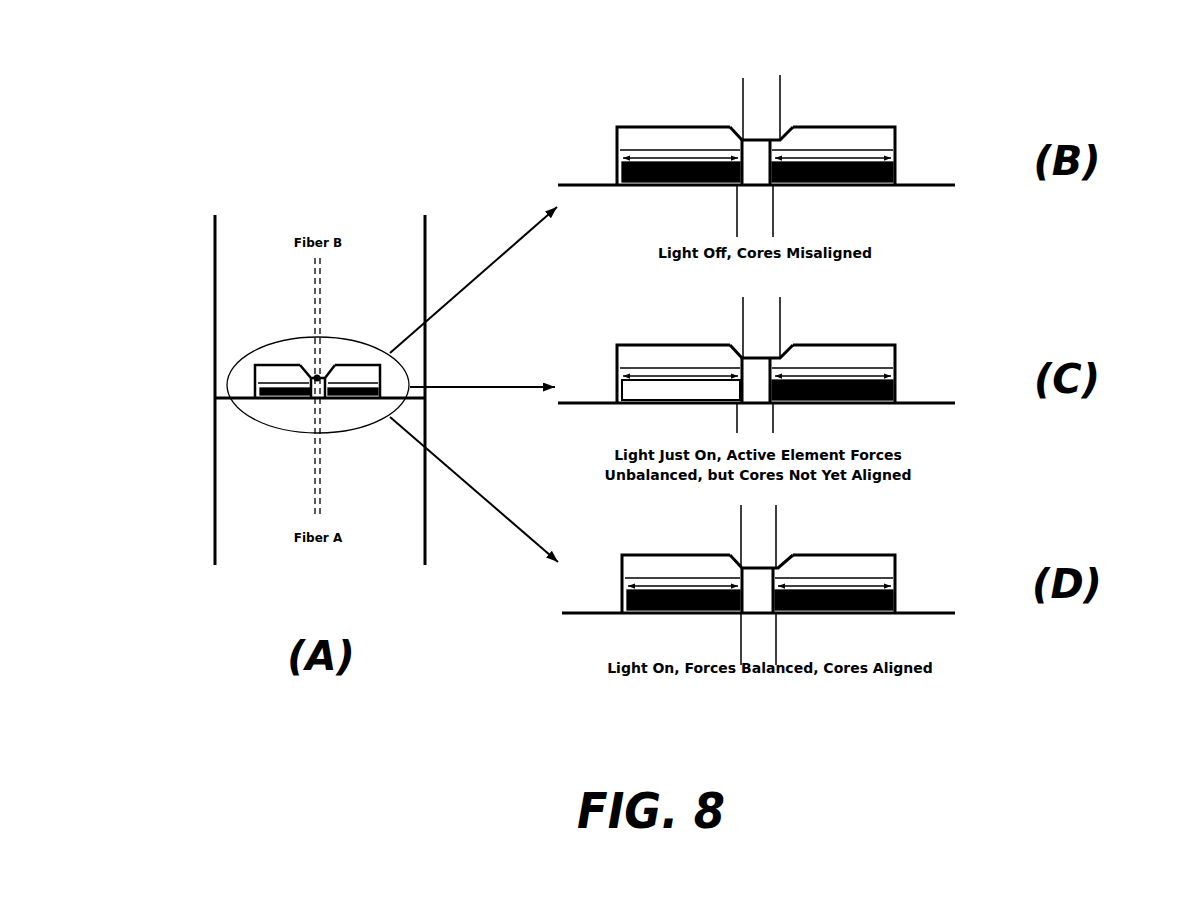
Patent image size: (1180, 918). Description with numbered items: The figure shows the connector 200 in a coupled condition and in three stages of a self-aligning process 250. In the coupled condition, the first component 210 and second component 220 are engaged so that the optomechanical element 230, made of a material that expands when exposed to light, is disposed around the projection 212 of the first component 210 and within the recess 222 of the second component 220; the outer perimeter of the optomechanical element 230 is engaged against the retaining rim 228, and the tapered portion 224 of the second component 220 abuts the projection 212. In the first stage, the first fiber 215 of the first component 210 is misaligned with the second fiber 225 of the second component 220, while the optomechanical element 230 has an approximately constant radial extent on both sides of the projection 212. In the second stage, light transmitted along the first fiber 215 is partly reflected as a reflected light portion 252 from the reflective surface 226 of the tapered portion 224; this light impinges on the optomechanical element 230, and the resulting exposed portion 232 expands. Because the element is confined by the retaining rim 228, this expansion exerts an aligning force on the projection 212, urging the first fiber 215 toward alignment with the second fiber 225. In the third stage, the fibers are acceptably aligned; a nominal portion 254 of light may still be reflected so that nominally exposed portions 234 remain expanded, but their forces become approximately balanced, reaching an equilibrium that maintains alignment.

The connector 200 is at (135, 307).
The first component 210 is at (215, 518).
The projection 212 is at (318, 398).
The first fiber 215 is at (310, 467).
The second component 220 is at (215, 263).
The recess 222 is at (285, 367).
The tapered portion 224 is at (318, 380).
The second fiber 225 is at (310, 300).
The optically reflective surface 226 is at (336, 373).
The retaining rim 228 is at (215, 373).
The optomechanical element 230 is at (297, 398).
The exposed portion 232 is at (737, 365).
The nominally exposed portions 234 is at (728, 604).
The self-aligning process 250 is at (573, 98).
The reflected light portion 252 is at (735, 356).
The nominal portion of light 254 is at (730, 578).